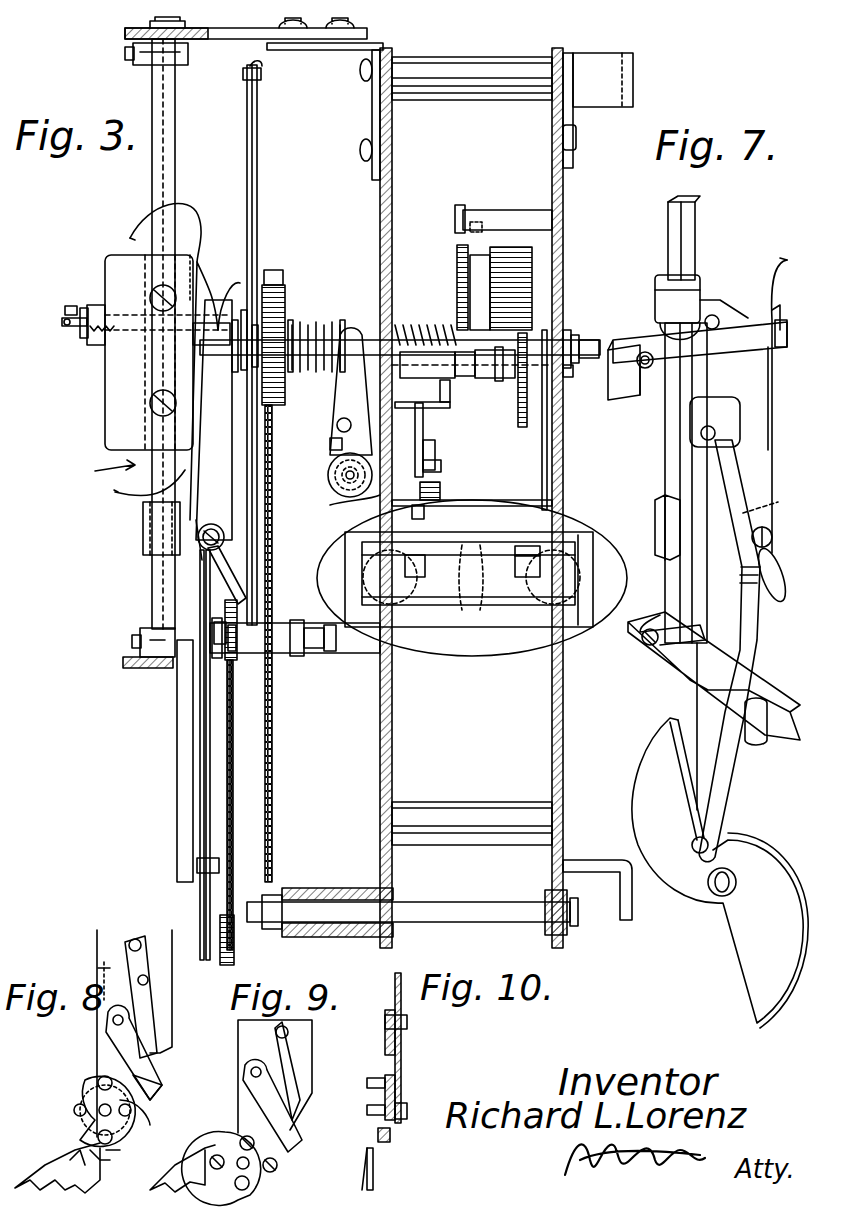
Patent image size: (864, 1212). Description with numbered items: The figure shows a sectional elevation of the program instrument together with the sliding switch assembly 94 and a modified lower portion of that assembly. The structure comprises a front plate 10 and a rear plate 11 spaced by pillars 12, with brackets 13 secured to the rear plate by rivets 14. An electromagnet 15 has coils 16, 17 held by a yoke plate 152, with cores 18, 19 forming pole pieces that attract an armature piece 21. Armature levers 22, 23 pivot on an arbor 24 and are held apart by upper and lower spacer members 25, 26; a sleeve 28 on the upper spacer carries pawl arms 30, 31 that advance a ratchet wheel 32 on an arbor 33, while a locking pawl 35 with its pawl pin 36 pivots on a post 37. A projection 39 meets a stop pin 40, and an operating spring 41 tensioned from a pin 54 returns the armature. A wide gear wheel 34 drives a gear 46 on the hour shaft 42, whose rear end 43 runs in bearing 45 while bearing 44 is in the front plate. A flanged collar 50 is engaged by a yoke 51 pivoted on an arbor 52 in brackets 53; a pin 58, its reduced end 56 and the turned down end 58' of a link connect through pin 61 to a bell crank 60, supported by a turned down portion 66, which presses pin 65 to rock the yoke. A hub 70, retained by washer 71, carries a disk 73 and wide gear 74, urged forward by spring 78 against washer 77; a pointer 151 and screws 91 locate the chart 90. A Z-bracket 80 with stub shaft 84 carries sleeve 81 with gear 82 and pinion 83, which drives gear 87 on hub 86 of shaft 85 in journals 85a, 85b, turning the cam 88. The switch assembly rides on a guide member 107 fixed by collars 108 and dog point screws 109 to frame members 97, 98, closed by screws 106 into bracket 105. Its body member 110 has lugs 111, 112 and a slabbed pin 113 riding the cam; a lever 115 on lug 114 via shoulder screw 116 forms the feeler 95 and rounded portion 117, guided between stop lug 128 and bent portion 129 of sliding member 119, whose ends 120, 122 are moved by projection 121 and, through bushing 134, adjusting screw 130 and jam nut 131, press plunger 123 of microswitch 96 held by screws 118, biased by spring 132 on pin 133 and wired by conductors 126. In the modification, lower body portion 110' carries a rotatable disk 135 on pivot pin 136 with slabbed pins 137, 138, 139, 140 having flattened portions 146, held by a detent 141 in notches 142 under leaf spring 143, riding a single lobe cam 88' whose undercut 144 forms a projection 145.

In FIG. 3, the front plate 10 is at (392, 152).
In FIG. 8, the front plate 10 is at (118, 1052).
In FIG. 3, the rear plate 11 is at (552, 111).
In FIG. 3, the pillars 12 is at (465, 802).
In FIG. 3, the brackets 13 is at (600, 860).
In FIG. 3, the rivets 14 is at (577, 140).
In FIG. 3, the electromagnet 15 is at (470, 640).
In FIG. 3, the coil 16 is at (358, 650).
In FIG. 3, the coil 17 is at (580, 640).
In FIG. 3, the core 18 is at (425, 568).
In FIG. 3, the core 19 is at (515, 570).
In FIG. 3, the armature piece 21 is at (500, 627).
In FIG. 3, the armature lever 22 is at (455, 542).
In FIG. 3, the armature lever 23 is at (547, 480).
In FIG. 3, the arbor 24 is at (478, 500).
In FIG. 3, the upper spacer member 25 is at (440, 360).
In FIG. 3, the lower spacer member 26 is at (528, 578).
In FIG. 3, the sleeve 28 is at (490, 378).
In FIG. 3, the pawl arm 30 is at (466, 378).
In FIG. 3, the pawl arm 31 is at (500, 382).
In FIG. 3, the ratchet wheel 32 is at (478, 225).
In FIG. 3, the arbor 33 is at (457, 250).
In FIG. 3, the gear wheel 34 is at (532, 255).
In FIG. 3, the locking pawl 35 is at (460, 205).
In FIG. 3, the pawl pin 36 is at (445, 262).
In FIG. 3, the post 37 is at (520, 210).
In FIG. 3, the projection 39 is at (575, 335).
In FIG. 3, the stop pin 40 is at (567, 330).
In FIG. 3, the operating spring 41 is at (440, 490).
In FIG. 3, the hour shaft 42 is at (440, 325).
In FIG. 3, the rear end of hour shaft 43 is at (592, 340).
In FIG. 3, the bearing 44 is at (410, 325).
In FIG. 3, the bearing 45 is at (570, 377).
In FIG. 3, the gear 46 is at (522, 427).
In FIG. 3, the flanged collar 50 is at (347, 320).
In FIG. 3, the yoke 51 is at (340, 385).
In FIG. 3, the arbor 52 is at (328, 475).
In FIG. 3, the brackets 53 is at (335, 505).
In FIG. 3, the pin 54 is at (424, 515).
In FIG. 3, the reduced end of pin 56 is at (441, 466).
In FIG. 3, the pin 58 is at (436, 440).
In FIG. 3, the turned down end of link 58' is at (453, 452).
In FIG. 3, the bell crank 60 is at (412, 402).
In FIG. 3, the pin 61 is at (450, 390).
In FIG. 3, the pin 65 is at (337, 425).
In FIG. 3, the turned down portion 66 is at (330, 444).
In FIG. 3, the hub 70 is at (244, 370).
In FIG. 3, the washer 71 is at (265, 285).
In FIG. 3, the disk 73 is at (258, 195).
In FIG. 3, the gear 74 is at (280, 270).
In FIG. 3, the washer 77 is at (300, 322).
In FIG. 3, the spring 78 is at (318, 320).
In FIG. 3, the Z-bracket 80 is at (325, 655).
In FIG. 3, the sleeve 81 is at (252, 660).
In FIG. 3, the gear 82 is at (272, 818).
In FIG. 3, the pinion 83 is at (225, 607).
In FIG. 3, the stub shaft 84 is at (214, 633).
In FIG. 3, the shaft 85 is at (278, 922).
In FIG. 3, the journal 85a is at (320, 888).
In FIG. 3, the journal 85b is at (548, 892).
In FIG. 3, the hub 86 is at (238, 948).
In FIG. 3, the gear 87 is at (232, 768).
In FIG. 3, the cam 88 is at (169, 761).
In FIG. 7, the cam 88 is at (720, 873).
In FIG. 8, the single lobe cam 88' is at (54, 1167).
In FIG. 9, the single lobe cam 88' is at (182, 1165).
In FIG. 10, the single lobe cam 88' is at (345, 1165).
In FIG. 3, the chart 90 is at (248, 140).
In FIG. 3, the screws 91 is at (243, 78).
In FIG. 3, the switch assembly 94 is at (106, 469).
In FIG. 3, the feeler 95 is at (212, 280).
In FIG. 7, the feeler 95 is at (790, 258).
In FIG. 3, the microswitch 96 is at (115, 393).
In FIG. 3, the upper U-shaped frame member 97 is at (256, 35).
In FIG. 3, the lower frame member 98 is at (135, 668).
In FIG. 3, the bracket 105 is at (378, 128).
In FIG. 3, the screws 106 is at (356, 20).
In FIG. 3, the guide member 107 is at (152, 195).
In FIG. 7, the guide member 107 is at (696, 212).
In FIG. 3, the collars 108 is at (142, 630).
In FIG. 7, the collars 108 is at (660, 615).
In FIG. 3, the dog point screws 109 is at (132, 641).
In FIG. 7, the dog point screws 109 is at (660, 642).
In FIG. 3, the body member 110 is at (165, 755).
In FIG. 7, the body member 110 is at (666, 566).
In FIG. 8, the lower portion of body member 110' is at (109, 1033).
In FIG. 9, the lower portion of body member 110' is at (252, 1076).
In FIG. 10, the lower portion of body member 110' is at (372, 1044).
In FIG. 7, the lug 111 is at (700, 282).
In FIG. 3, the lug 112 is at (143, 555).
In FIG. 7, the lug 112 is at (655, 515).
In FIG. 3, the slabbed pin 113 is at (219, 865).
In FIG. 7, the slabbed pin 113 is at (740, 840).
In FIG. 3, the lug 114 is at (204, 560).
In FIG. 7, the lug 114 is at (768, 505).
In FIG. 3, the lever 115 is at (222, 525).
In FIG. 7, the lever 115 is at (765, 465).
In FIG. 3, the shoulder screw 116 is at (198, 537).
In FIG. 7, the shoulder screw 116 is at (772, 533).
In FIG. 3, the rounded portion 117 is at (240, 590).
In FIG. 7, the rounded portion 117 is at (775, 605).
In FIG. 3, the screws 118 is at (151, 410).
In FIG. 3, the sliding member 119 is at (92, 338).
In FIG. 7, the sliding member 119 is at (655, 350).
In FIG. 3, the bent over rearward end 120 is at (224, 290).
In FIG. 7, the bent over rearward end 120 is at (788, 345).
In FIG. 7, the rounded projection 121 is at (776, 308).
In FIG. 7, the bent over forward end 122 is at (632, 380).
In FIG. 3, the plunger 123 is at (105, 300).
In FIG. 3, the conductors 126 is at (118, 492).
In FIG. 7, the stop lug 128 is at (748, 315).
In FIG. 7, the inwardly bent portion 129 is at (774, 400).
In FIG. 3, the adjusting screw 130 is at (68, 306).
In FIG. 3, the jam nut 131 is at (62, 322).
In FIG. 3, the spring 132 is at (88, 340).
In FIG. 3, the pin 133 is at (90, 330).
In FIG. 3, the bushing 134 is at (85, 308).
In FIG. 7, the bushing 134 is at (646, 368).
In FIG. 8, the rotatable disk 135 is at (150, 1122).
In FIG. 9, the rotatable disk 135 is at (245, 1145).
In FIG. 10, the rotatable disk 135 is at (385, 1075).
In FIG. 8, the pivot pin 136 is at (80, 1088).
In FIG. 9, the pivot pin 136 is at (250, 1163).
In FIG. 8, the slabbed pin 137 is at (98, 1135).
In FIG. 9, the slabbed pin 137 is at (240, 1143).
In FIG. 10, the slabbed pin 137 is at (378, 1135).
In FIG. 8, the slabbed pin 138 is at (98, 1108).
In FIG. 9, the slabbed pin 138 is at (218, 1150).
In FIG. 10, the slabbed pin 138 is at (367, 1108).
In FIG. 8, the slabbed pin 139 is at (100, 1076).
In FIG. 10, the slabbed pin 139 is at (367, 1083).
In FIG. 8, the slabbed pin 140 is at (131, 1110).
In FIG. 8, the detent 141 is at (150, 1075).
In FIG. 9, the detent 141 is at (290, 1122).
In FIG. 10, the detent 141 is at (385, 1035).
In FIG. 8, the notches 142 is at (85, 1100).
In FIG. 8, the leaf spring 143 is at (157, 1005).
In FIG. 8, the undercut 144 is at (78, 1168).
In FIG. 8, the projection 145 is at (107, 1160).
In FIG. 8, the flattened portion 146 is at (158, 1085).
In FIG. 3, the pointer 151 is at (264, 64).
In FIG. 3, the yoke plate 152 is at (440, 627).